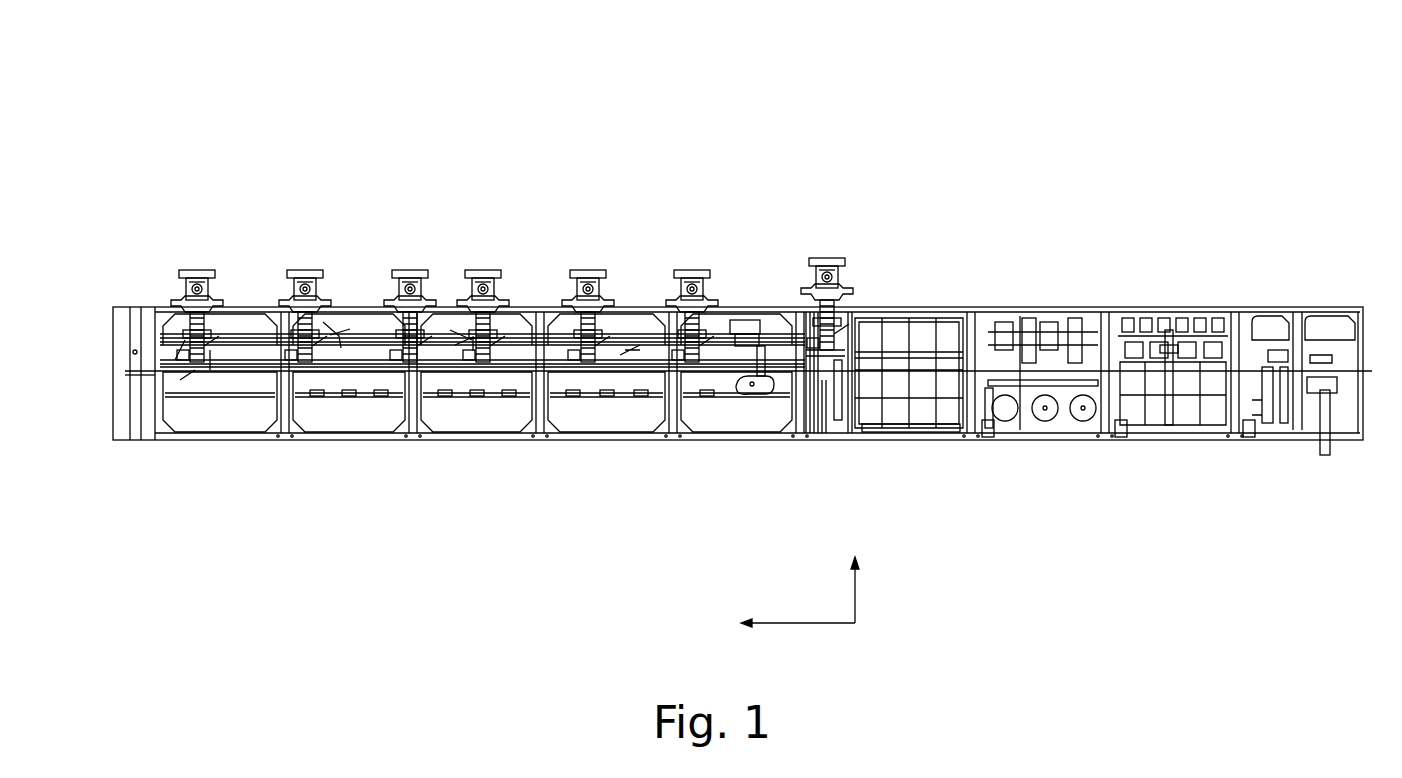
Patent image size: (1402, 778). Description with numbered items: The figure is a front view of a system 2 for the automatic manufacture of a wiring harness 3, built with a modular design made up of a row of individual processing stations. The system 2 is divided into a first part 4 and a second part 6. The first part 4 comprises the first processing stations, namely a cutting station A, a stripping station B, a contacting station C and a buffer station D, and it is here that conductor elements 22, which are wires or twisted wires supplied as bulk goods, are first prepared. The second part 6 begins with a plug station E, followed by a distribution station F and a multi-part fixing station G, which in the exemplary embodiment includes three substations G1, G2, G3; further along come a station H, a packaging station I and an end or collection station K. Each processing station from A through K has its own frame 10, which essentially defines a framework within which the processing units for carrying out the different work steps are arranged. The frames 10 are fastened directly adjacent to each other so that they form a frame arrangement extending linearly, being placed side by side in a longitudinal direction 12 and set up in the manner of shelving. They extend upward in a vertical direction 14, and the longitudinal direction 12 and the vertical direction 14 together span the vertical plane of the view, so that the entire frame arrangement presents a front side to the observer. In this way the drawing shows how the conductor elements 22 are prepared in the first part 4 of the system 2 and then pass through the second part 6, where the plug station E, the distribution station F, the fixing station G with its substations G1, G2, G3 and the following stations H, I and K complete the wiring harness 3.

The system 2 is at (1247, 122).
The wiring harness 3 is at (333, 327).
The first part 4 is at (1069, 535).
The second part 6 is at (432, 535).
The frame 10 is at (733, 442).
The longitudinal direction 12 is at (818, 625).
The vertical direction 14 is at (857, 598).
The conductor elements 22 is at (1322, 452).
The end or collection station K is at (137, 277).
The packaging station I is at (257, 277).
The second processing station H is at (352, 277).
The multi-part fixing station G is at (840, 147).
The substation G3 is at (483, 270).
The substation G2 is at (590, 270).
The distribution station F is at (750, 280).
The substation G1 is at (737, 353).
The plug station E is at (822, 258).
The buffer station D is at (930, 278).
The contacting station C is at (1050, 278).
The stripping station B is at (1168, 278).
The cutting station A is at (1290, 278).